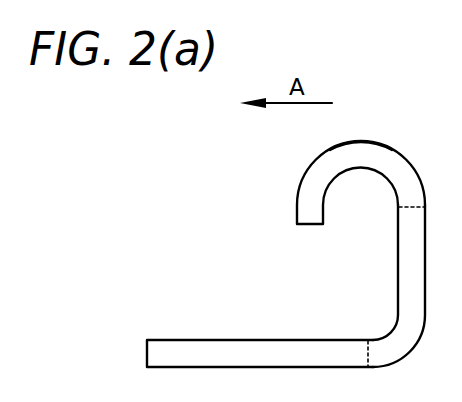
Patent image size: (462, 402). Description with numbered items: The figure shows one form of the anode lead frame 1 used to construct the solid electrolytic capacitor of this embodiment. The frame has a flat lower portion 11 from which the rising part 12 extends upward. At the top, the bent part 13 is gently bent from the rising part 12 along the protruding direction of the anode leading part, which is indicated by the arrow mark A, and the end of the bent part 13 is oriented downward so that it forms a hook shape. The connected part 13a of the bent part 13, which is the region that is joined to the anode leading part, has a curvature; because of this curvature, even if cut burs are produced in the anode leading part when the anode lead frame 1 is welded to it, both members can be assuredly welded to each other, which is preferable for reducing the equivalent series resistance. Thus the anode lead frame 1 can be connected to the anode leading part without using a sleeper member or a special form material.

The anode lead frame 1 is at (217, 213).
The base portion 11 is at (295, 356).
The rising part 12 is at (407, 275).
The bent part 13 is at (310, 213).
The connected part 13a is at (379, 130).